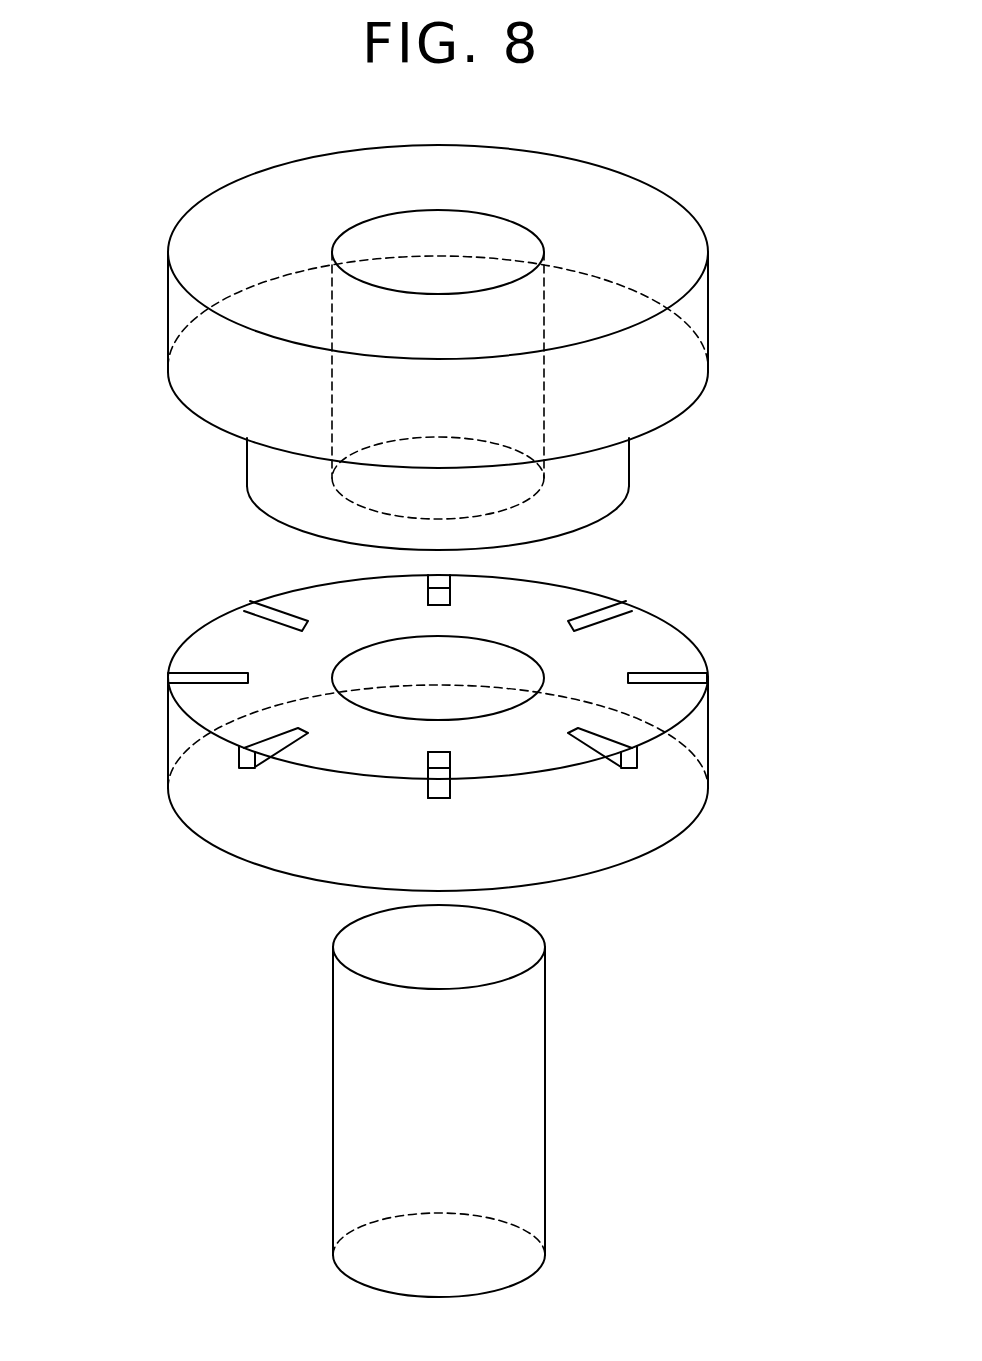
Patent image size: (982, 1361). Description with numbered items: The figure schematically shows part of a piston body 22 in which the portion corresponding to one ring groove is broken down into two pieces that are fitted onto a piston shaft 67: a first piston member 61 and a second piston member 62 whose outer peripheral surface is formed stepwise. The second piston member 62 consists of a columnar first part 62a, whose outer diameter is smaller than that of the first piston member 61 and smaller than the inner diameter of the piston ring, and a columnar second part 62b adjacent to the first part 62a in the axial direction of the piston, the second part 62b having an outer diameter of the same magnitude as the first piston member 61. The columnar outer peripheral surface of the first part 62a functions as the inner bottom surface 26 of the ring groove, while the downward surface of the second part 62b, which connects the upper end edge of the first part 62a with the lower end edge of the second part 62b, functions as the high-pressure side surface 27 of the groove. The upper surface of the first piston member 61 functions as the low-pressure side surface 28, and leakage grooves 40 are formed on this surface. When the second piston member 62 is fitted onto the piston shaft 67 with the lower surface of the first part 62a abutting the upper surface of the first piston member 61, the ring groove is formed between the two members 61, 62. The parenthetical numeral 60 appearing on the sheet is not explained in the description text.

The piston body 22 is at (150, 198).
The inner bottom surface 26 is at (247, 468).
The high-pressure side surface 27 is at (205, 419).
The low-pressure side surface 28 is at (223, 645).
The leakage grooves 40 is at (597, 735).
The rotor body 60 is at (489, 518).
The first piston member 61 is at (695, 735).
The second piston member 62 is at (710, 287).
The first part 62a is at (632, 465).
The second part 62b is at (710, 335).
The piston shaft 67 is at (548, 1075).